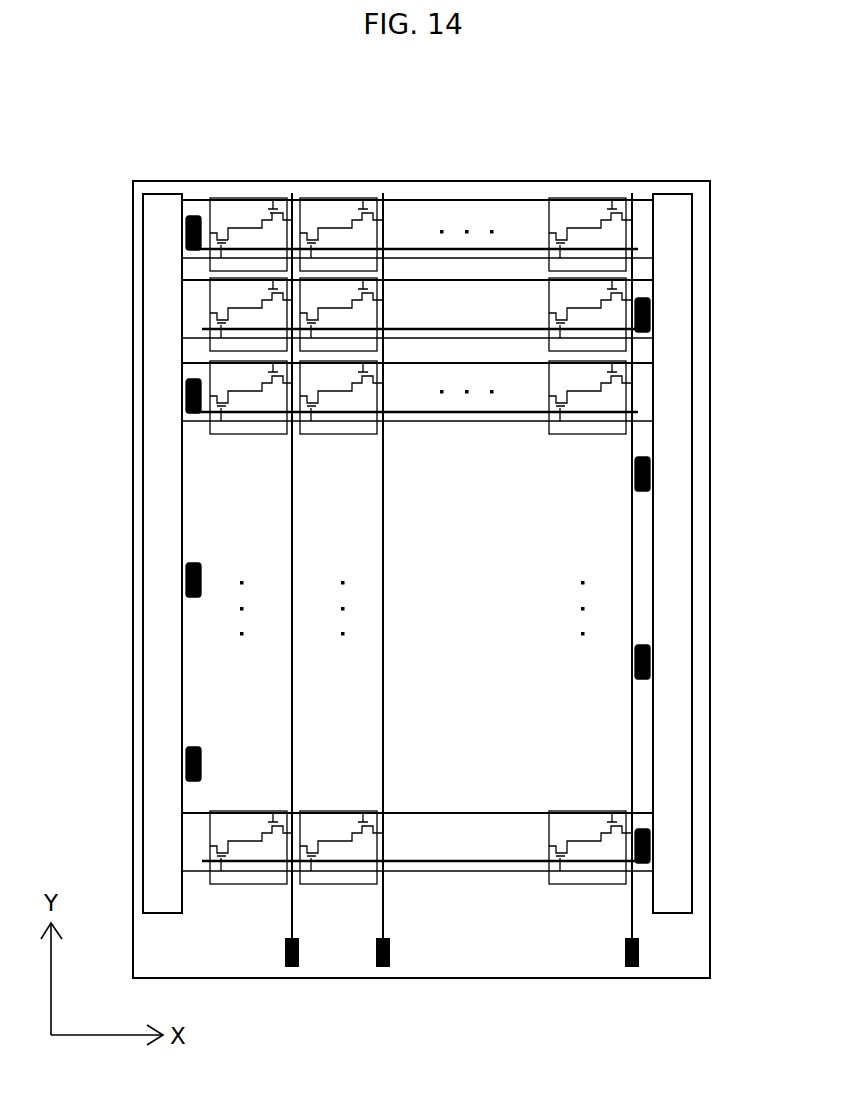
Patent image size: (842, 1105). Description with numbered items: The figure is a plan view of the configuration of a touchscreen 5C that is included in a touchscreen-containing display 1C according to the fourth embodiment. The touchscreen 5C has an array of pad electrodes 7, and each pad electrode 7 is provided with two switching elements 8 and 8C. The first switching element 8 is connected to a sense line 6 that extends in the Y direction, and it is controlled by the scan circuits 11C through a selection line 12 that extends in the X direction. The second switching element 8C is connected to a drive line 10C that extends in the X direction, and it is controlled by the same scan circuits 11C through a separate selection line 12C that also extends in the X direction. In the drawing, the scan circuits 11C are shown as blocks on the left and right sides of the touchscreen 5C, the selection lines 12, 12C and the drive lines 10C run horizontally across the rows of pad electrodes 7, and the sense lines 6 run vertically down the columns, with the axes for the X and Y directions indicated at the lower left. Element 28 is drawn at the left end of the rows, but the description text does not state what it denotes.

The touchscreen-containing display 1C is at (741, 116).
The touchscreen 5C is at (723, 173).
The sense line 6 is at (293, 917).
The pad electrode 7 is at (252, 210).
The switching element 8 is at (271, 204).
The switching element 8C is at (233, 240).
The drive line 10C is at (529, 249).
The scan circuit 11C is at (674, 194).
The selection line 12 is at (413, 200).
The selection line 12C is at (468, 258).
The pad 28 is at (192, 215).